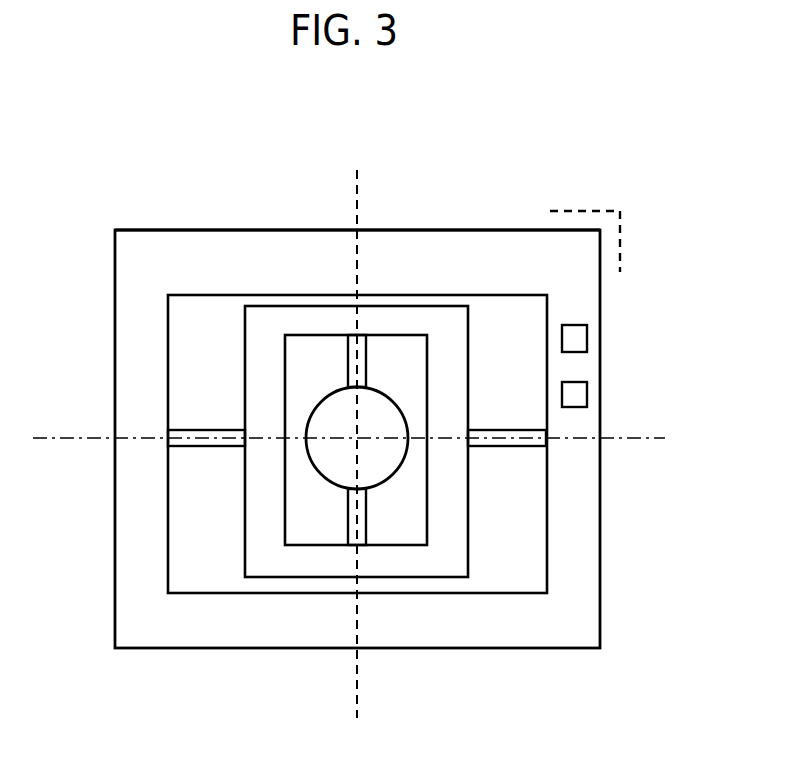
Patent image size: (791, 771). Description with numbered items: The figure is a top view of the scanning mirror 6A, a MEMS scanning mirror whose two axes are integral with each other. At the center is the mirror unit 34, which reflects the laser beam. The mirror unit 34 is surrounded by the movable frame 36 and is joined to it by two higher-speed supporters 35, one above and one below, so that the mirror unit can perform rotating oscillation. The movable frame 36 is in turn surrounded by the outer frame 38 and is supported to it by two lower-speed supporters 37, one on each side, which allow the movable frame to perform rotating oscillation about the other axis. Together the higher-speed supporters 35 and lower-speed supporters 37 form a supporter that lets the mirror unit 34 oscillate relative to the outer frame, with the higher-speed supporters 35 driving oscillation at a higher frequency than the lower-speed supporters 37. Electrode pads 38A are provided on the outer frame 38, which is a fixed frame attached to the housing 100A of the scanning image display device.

The scanning mirror 6A is at (194, 200).
The housing 100A is at (620, 240).
The mirror unit 34 is at (380, 483).
The higher-speed supporters 35 is at (361, 353).
The movable frame 36 is at (272, 577).
The lower-speed supporters 37 is at (198, 447).
The outer frame 38 is at (600, 622).
The electrode pads 38A is at (619, 366).